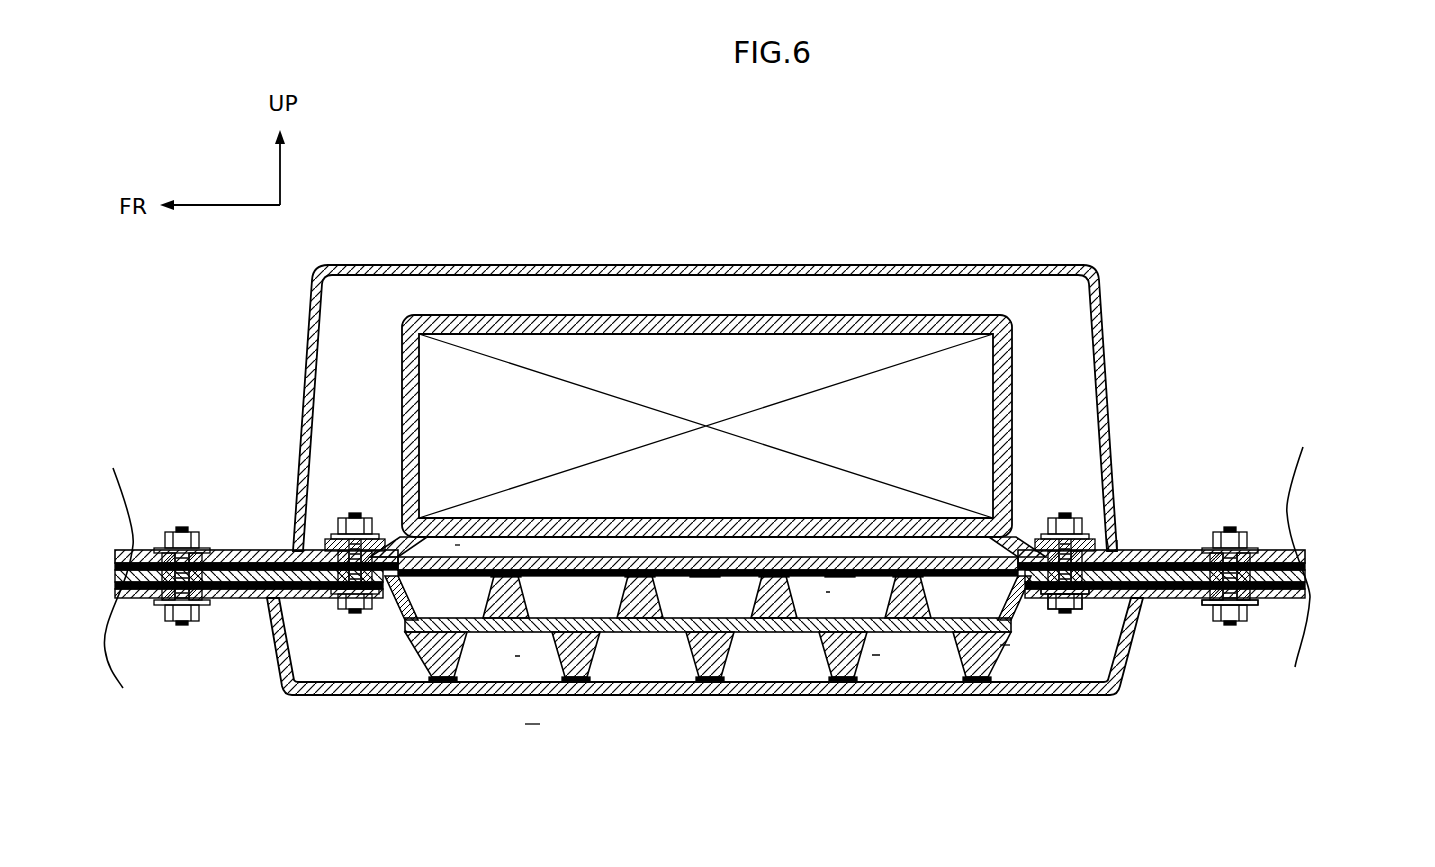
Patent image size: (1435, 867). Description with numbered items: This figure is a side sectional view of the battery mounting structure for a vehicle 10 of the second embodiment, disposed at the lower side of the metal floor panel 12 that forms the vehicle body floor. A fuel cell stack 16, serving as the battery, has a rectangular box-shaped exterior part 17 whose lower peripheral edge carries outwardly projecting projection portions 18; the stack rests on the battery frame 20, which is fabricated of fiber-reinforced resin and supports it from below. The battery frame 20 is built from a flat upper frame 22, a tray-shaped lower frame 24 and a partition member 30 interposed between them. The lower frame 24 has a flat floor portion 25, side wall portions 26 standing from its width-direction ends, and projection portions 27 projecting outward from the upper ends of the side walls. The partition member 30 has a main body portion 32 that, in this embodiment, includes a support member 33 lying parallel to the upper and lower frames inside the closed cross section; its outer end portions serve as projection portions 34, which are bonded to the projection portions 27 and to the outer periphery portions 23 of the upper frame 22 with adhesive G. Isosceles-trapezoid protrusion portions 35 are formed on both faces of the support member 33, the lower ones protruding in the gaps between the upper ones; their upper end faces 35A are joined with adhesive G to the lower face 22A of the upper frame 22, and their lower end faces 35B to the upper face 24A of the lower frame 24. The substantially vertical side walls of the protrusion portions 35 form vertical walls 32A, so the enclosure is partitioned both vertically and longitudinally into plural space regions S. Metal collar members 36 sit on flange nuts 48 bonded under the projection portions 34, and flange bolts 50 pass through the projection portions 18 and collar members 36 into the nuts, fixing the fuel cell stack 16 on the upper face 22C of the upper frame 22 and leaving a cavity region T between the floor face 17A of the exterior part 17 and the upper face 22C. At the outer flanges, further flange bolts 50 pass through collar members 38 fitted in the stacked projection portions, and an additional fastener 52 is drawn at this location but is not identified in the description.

The battery mounting structure for a vehicle 10 is at (533, 735).
The floor panel 12 is at (682, 265).
The fuel cell stack 16 is at (785, 308).
The exterior part 17 is at (998, 315).
The floor face 17A is at (483, 556).
The projection portions 18 is at (1118, 546).
The battery frame 20 is at (266, 708).
The upper frame 22 is at (574, 548).
The lower face 22A is at (706, 577).
The upper face 22C is at (840, 562).
The outer periphery portions 23 is at (1302, 557).
The lower frame 24 is at (485, 704).
The upper face 24A is at (767, 665).
The floor portion 25 is at (921, 684).
The side wall portions 26 is at (1140, 648).
The projection portions 27 is at (1305, 596).
The partition member 30 is at (1012, 652).
The main body portion 32 is at (396, 642).
The vertical walls 32A is at (540, 575).
The support member 33 is at (642, 638).
The projection portions 34 is at (1303, 577).
The protrusion portions 35 is at (641, 590).
The upper end faces 35A is at (777, 575).
The lower end faces 35B is at (977, 682).
The collar members 36 is at (1088, 596).
The collar members 38 is at (1250, 620).
The flange nuts 48 is at (1057, 609).
The flange bolts 50 is at (1062, 516).
The outer bolt 52 is at (1243, 530).
The cavity region T is at (450, 545).
The space regions S is at (523, 661).
The adhesive G is at (935, 572).